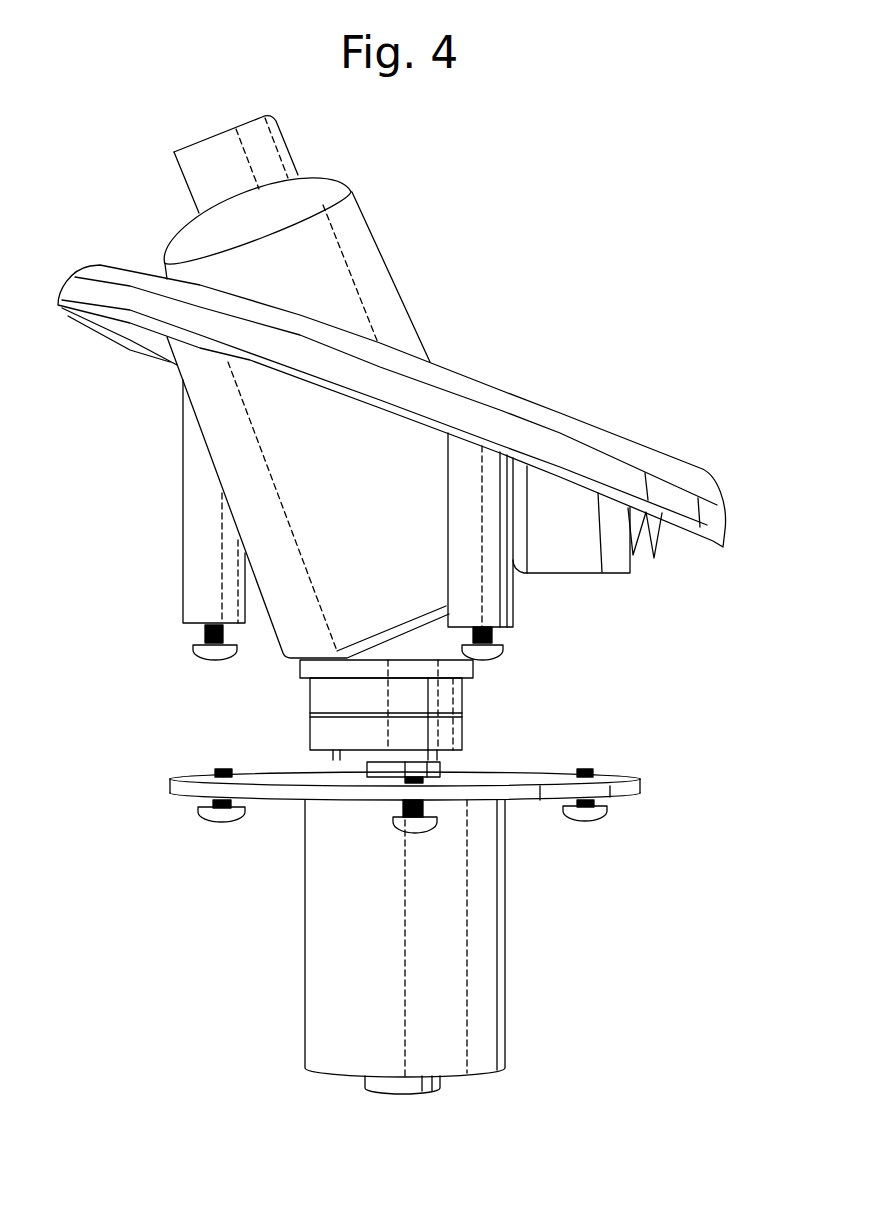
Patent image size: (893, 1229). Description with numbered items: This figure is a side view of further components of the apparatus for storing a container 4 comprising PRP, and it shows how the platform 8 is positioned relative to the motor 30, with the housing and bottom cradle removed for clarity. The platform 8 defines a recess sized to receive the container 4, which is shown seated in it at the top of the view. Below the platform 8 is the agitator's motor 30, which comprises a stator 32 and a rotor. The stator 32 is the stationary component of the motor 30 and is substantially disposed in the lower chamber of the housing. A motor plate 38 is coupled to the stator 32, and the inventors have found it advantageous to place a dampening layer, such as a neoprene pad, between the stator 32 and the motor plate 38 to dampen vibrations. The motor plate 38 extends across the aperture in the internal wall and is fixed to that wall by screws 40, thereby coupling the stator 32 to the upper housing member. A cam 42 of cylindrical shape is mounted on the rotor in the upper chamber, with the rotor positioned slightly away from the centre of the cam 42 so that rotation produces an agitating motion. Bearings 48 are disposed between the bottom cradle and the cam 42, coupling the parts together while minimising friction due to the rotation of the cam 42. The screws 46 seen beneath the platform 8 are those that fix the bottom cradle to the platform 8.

The container 4 is at (370, 266).
The platform 8 is at (592, 440).
The motor 30 is at (507, 1007).
The stator 32 is at (317, 988).
The motor plate 38 is at (608, 777).
The screws 40 is at (213, 823).
The cam 42 is at (352, 756).
The screws 46 is at (207, 658).
The bearings 48 is at (472, 714).